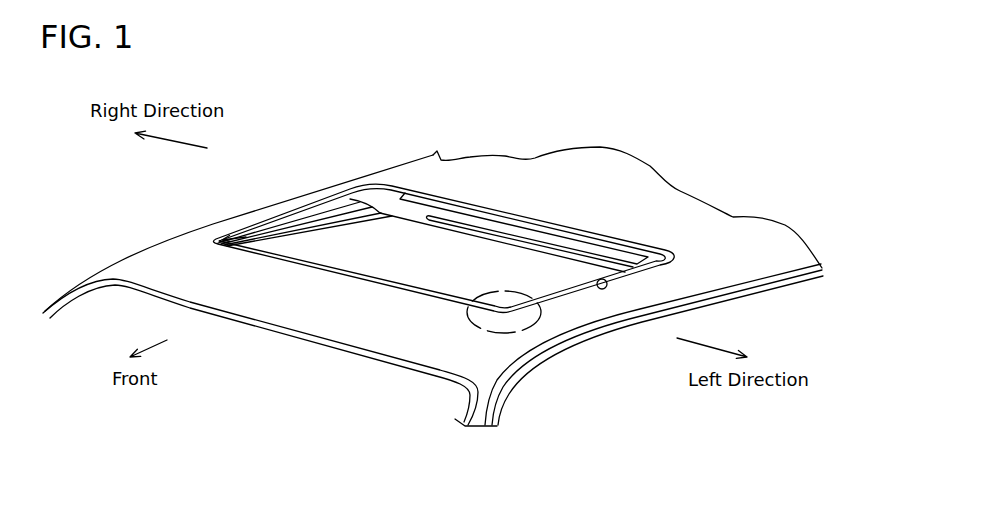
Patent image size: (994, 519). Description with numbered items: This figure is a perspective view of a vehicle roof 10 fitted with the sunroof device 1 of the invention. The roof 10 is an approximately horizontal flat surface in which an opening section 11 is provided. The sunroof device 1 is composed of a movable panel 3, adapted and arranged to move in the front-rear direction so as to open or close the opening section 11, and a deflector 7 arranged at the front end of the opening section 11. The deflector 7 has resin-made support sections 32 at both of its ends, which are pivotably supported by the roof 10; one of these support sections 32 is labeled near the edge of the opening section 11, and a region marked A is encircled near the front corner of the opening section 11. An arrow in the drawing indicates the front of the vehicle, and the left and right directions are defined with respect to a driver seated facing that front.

The sunroof device 1 is at (239, 274).
The movable panel 3 is at (547, 230).
The deflector 7 is at (434, 282).
The roof 10 is at (183, 257).
The opening section 11 is at (330, 237).
The support section 32 is at (604, 289).
The detail region A is at (464, 332).